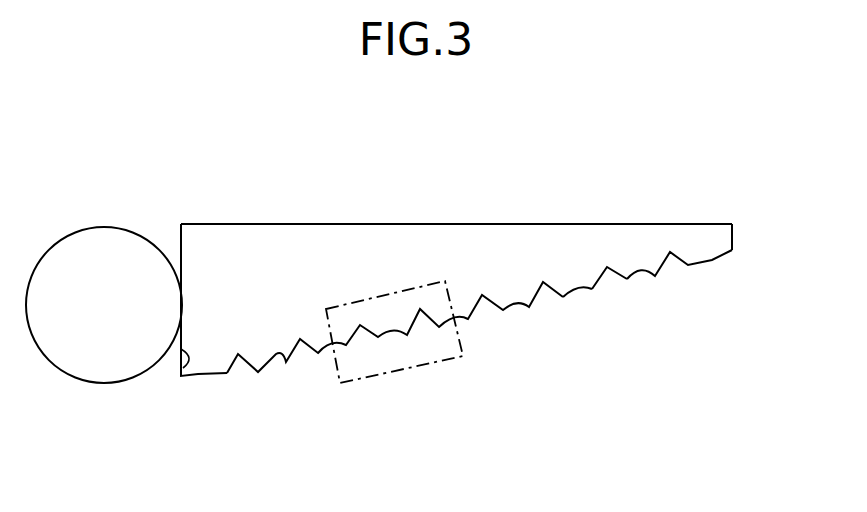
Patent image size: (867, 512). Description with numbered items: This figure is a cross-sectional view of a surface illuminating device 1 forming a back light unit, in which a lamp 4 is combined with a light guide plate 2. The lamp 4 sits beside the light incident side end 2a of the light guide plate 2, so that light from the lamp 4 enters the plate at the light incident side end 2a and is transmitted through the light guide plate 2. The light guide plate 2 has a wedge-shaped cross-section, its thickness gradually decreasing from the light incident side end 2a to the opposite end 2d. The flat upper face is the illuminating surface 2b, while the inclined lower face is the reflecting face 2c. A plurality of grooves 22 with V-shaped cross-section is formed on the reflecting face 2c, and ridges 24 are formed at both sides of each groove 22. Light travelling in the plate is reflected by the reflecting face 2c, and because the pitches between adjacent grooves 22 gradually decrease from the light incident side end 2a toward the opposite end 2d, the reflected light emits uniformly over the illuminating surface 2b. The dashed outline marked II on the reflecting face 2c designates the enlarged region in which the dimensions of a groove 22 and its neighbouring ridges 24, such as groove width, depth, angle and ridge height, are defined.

The surface illuminating device 1 is at (263, 198).
The light guide plate 2 is at (484, 300).
The light incident side end 2a is at (188, 364).
The illuminating surface 2b is at (506, 224).
The reflecting face 2c is at (278, 356).
The opposite end 2d is at (729, 247).
The lamp 4 is at (100, 238).
The groove 22 is at (607, 275).
The ridge 24 is at (588, 290).
The section II is at (371, 363).